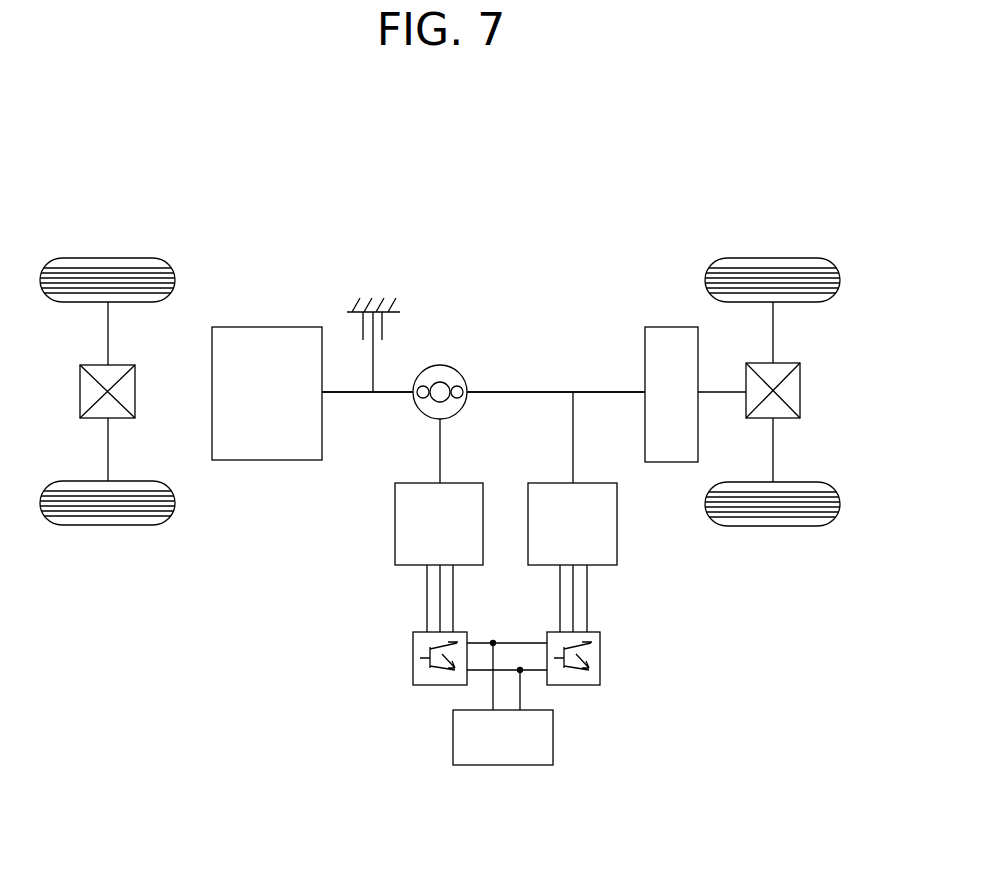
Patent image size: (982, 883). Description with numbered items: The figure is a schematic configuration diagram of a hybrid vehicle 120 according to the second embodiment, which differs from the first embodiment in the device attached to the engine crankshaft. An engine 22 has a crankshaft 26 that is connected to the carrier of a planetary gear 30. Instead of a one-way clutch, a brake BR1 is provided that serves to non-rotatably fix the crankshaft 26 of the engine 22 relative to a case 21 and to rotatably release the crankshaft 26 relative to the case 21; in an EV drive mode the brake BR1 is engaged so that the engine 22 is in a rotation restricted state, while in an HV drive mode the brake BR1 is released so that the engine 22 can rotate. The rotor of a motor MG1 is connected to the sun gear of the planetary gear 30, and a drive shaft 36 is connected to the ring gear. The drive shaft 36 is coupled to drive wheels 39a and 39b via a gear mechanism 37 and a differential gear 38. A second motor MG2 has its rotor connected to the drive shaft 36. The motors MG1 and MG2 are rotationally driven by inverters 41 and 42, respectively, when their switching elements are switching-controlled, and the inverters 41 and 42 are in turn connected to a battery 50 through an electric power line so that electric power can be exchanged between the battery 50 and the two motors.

The hybrid vehicle 120 is at (566, 232).
The engine 22 is at (264, 326).
The crankshaft 26 is at (333, 394).
The case 21 is at (347, 326).
The brake BR1 is at (387, 330).
The planetary gear 30 is at (438, 364).
The drive shaft 36 is at (601, 390).
The gear mechanism 37 is at (671, 326).
The differential gear 38 is at (783, 362).
The drive wheel 39a is at (773, 256).
The drive wheel 39b is at (774, 527).
The motor MG1 is at (467, 482).
The motor MG2 is at (600, 482).
The inverter 41 is at (462, 630).
The inverter 42 is at (596, 630).
The battery 50 is at (554, 736).